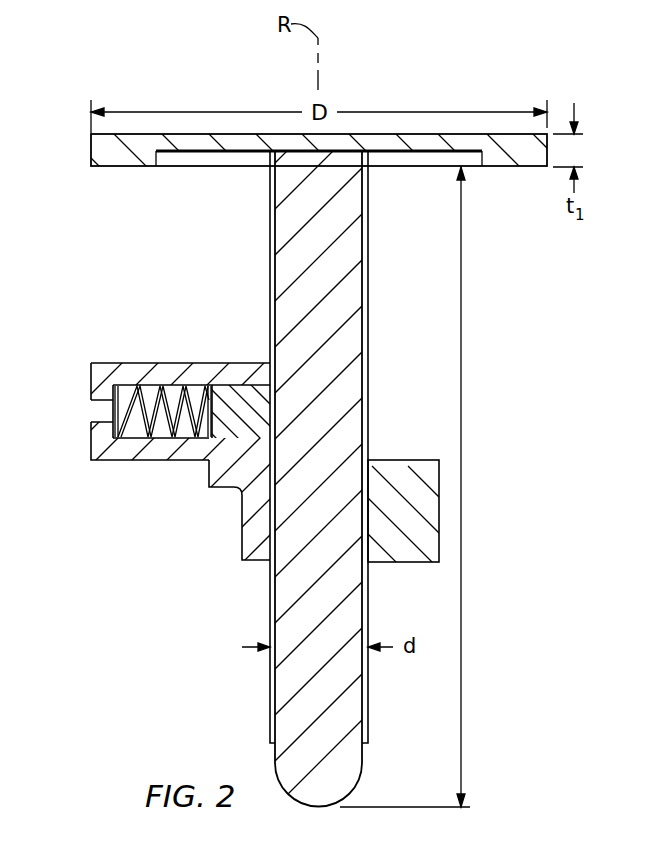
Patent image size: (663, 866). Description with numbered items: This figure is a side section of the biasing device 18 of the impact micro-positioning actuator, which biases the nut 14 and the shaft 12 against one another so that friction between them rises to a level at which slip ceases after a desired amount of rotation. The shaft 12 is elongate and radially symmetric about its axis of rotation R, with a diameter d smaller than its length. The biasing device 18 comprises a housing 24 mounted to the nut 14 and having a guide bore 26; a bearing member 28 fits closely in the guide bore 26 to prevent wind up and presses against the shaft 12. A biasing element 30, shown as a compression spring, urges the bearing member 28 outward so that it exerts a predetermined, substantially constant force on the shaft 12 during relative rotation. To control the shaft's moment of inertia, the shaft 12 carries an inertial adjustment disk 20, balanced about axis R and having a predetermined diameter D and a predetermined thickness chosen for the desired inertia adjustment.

The shaft 12 is at (265, 693).
The nut 14 is at (240, 537).
The biasing device 18 is at (58, 459).
The inertial adjustment disk 20 is at (123, 168).
The housing 24 is at (86, 372).
The guide bore 26 is at (152, 390).
The bearing member 28 is at (248, 392).
The biasing element 30 is at (145, 433).